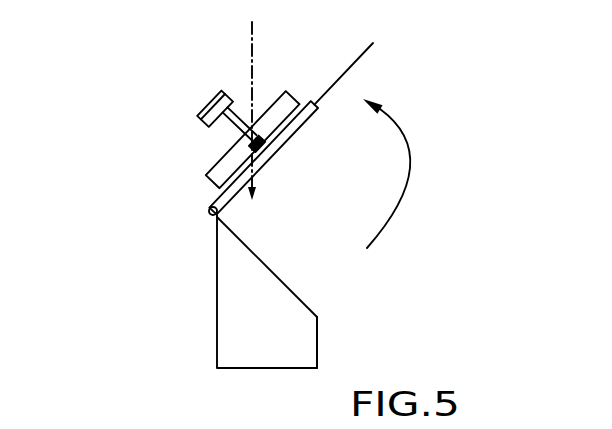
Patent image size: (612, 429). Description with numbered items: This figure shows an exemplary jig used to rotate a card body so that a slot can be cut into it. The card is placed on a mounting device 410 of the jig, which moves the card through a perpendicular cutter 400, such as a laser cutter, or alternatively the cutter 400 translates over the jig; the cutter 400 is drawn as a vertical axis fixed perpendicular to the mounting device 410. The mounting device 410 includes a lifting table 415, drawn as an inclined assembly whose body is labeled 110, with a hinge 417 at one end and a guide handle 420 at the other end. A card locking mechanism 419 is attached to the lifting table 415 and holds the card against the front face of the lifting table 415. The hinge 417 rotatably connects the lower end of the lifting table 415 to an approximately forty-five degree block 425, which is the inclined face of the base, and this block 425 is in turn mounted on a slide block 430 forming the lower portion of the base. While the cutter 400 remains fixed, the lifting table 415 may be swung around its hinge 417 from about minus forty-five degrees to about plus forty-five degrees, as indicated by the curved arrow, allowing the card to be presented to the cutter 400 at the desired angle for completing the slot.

The linear actuator body 110 is at (242, 164).
The cutter 400 is at (252, 63).
The mounting device 410 is at (242, 291).
The lifting table 415 is at (243, 178).
The hinge 417 is at (208, 212).
The card locking mechanism 419 is at (220, 92).
The guide handle 420 is at (352, 63).
The 45 degree block 425 is at (283, 306).
The slide block 430 is at (309, 350).